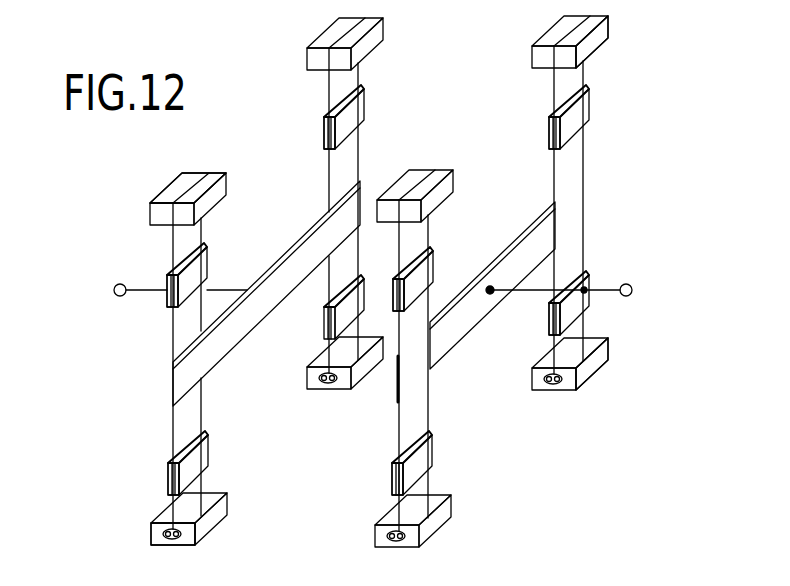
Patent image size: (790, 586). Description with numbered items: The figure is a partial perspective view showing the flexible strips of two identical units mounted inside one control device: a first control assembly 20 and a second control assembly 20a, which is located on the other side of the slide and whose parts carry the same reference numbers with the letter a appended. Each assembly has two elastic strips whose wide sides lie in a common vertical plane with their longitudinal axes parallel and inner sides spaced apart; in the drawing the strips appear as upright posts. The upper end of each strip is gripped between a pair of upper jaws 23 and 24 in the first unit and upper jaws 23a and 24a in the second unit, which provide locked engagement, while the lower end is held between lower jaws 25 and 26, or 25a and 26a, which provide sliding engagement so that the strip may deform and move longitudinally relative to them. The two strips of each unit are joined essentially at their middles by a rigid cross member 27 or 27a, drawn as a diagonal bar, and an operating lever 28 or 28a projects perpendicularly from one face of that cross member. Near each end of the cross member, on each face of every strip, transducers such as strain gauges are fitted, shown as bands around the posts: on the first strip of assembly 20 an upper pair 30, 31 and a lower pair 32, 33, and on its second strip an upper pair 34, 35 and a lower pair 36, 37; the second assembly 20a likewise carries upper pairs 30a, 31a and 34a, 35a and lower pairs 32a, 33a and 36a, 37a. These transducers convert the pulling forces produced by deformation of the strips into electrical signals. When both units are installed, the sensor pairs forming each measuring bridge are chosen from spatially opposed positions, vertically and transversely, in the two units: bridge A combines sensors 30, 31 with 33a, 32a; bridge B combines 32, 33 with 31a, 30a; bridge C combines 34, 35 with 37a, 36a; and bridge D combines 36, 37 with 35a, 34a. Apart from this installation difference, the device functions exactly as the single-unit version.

The control assembly 20 is at (645, 71).
The second control assembly 20a is at (246, 81).
The upper jaw 23 is at (549, 35).
The upper jaw 23a is at (203, 197).
The upper jaw 24 is at (593, 43).
The upper jaw 24a is at (176, 196).
The lower jaw 25 is at (540, 379).
The lower jaw 25a is at (208, 523).
The lower jaw 26 is at (588, 371).
The lower jaw 26a is at (153, 529).
The rigid cross member 27 is at (528, 238).
The rigid cross member 27a is at (298, 252).
The operating lever 28 is at (627, 284).
The operating lever 28a is at (114, 290).
The transducer 30 is at (550, 139).
The transducer 30a is at (204, 252).
The transducer 31 is at (577, 124).
The transducer 31a is at (166, 304).
The transducer 32 is at (552, 311).
The transducer 32a is at (200, 456).
The transducer 33 is at (576, 308).
The transducer 33a is at (166, 477).
The transducer 34 is at (394, 279).
The transducer 34a is at (344, 118).
The transducer 35 is at (422, 272).
The transducer 35a is at (323, 128).
The transducer 36 is at (391, 478).
The transducer 36a is at (362, 300).
The transducer 37 is at (423, 459).
The transducer 37a is at (324, 322).